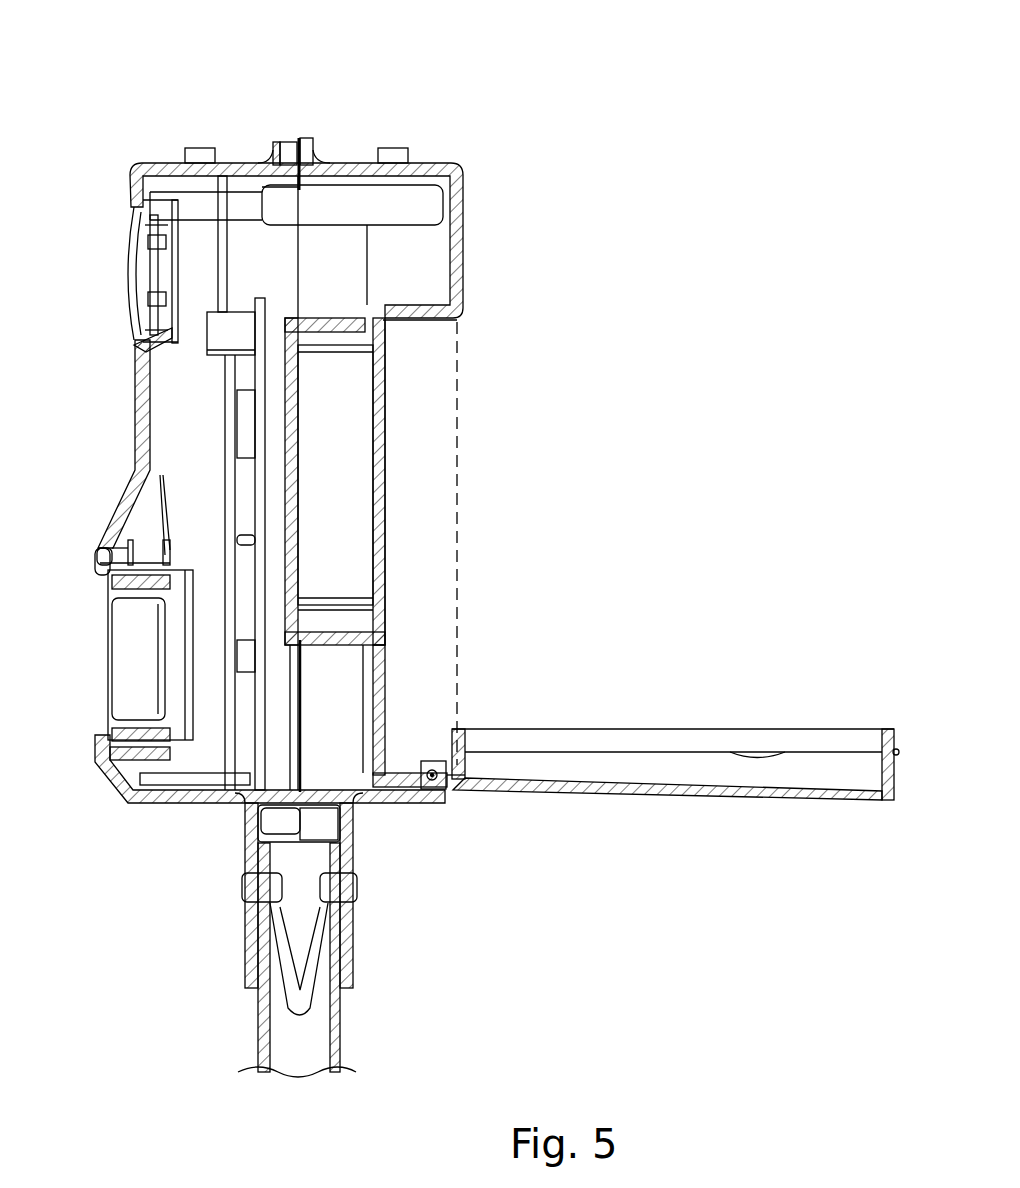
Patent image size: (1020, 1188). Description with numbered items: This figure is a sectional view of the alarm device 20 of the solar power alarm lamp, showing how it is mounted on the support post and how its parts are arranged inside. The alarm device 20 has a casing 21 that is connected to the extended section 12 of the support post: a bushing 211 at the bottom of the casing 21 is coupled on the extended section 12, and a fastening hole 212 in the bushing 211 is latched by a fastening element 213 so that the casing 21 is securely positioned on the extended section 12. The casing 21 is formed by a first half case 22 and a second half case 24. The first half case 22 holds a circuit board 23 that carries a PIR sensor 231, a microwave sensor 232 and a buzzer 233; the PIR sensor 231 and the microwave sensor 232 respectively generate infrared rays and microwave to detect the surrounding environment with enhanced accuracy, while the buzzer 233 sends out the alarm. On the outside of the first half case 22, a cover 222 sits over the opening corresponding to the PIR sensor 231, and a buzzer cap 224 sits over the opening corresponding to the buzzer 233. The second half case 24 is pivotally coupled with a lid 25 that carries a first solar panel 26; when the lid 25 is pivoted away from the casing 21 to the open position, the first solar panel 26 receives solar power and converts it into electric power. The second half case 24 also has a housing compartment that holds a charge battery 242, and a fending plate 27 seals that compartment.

The alarm device 20 is at (650, 218).
The casing 21 is at (237, 68).
The first half case 22 is at (250, 163).
The second half case 24 is at (338, 163).
The buzzer cap 224 is at (132, 250).
The buzzer 233 is at (132, 302).
The circuit board 23 is at (238, 371).
The fending plate 27 is at (384, 405).
The charge battery 242 is at (360, 528).
The microwave sensor 232 is at (130, 538).
The PIR sensor 231 is at (248, 655).
The cover 222 is at (118, 678).
The first solar panel 26 is at (638, 742).
The lid 25 is at (716, 795).
The fastening hole 212 is at (260, 882).
The fastening element 213 is at (345, 888).
The bushing 211 is at (248, 960).
The extended section 12 is at (345, 1030).